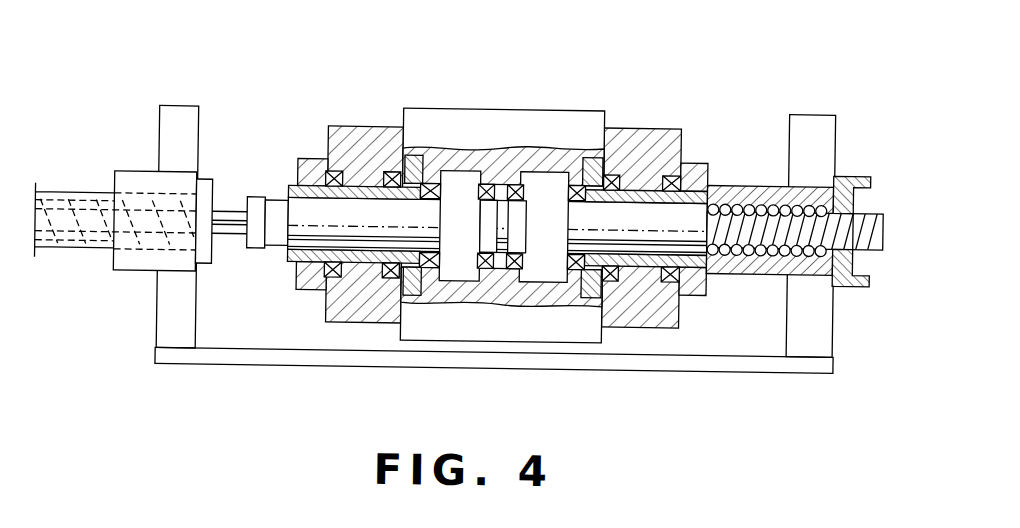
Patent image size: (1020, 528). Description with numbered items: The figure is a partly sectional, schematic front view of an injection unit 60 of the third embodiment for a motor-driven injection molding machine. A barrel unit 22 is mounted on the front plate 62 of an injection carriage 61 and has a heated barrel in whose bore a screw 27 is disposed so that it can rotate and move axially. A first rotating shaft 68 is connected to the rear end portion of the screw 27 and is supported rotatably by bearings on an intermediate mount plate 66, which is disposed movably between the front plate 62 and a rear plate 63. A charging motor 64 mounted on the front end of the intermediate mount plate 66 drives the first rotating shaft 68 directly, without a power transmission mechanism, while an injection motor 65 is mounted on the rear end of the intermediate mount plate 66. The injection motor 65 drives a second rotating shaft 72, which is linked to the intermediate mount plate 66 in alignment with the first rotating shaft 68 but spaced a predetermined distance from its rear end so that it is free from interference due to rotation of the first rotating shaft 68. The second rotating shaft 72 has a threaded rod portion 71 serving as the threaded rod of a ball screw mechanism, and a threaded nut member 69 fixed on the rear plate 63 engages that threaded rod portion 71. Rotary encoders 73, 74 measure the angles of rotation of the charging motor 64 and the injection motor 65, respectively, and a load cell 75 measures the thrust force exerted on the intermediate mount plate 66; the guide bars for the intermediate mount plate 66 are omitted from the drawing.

The barrel unit 22 is at (63, 197).
The screw 27 is at (75, 255).
The injection unit 60 is at (178, 92).
The injection carriage 61 is at (196, 376).
The front plate 62 is at (167, 314).
The rear plate 63 is at (810, 109).
The charging motor 64 is at (330, 298).
The injection motor 65 is at (682, 316).
The intermediate mount plate 66 is at (497, 329).
The first rotating shaft 68 is at (287, 247).
The threaded nut member 69 is at (795, 219).
The threaded rod portion 71 is at (748, 200).
The second rotating shaft 72 is at (640, 177).
The rotary encoder 73 is at (302, 160).
The rotary encoder 74 is at (697, 161).
The load cell 75 is at (848, 170).